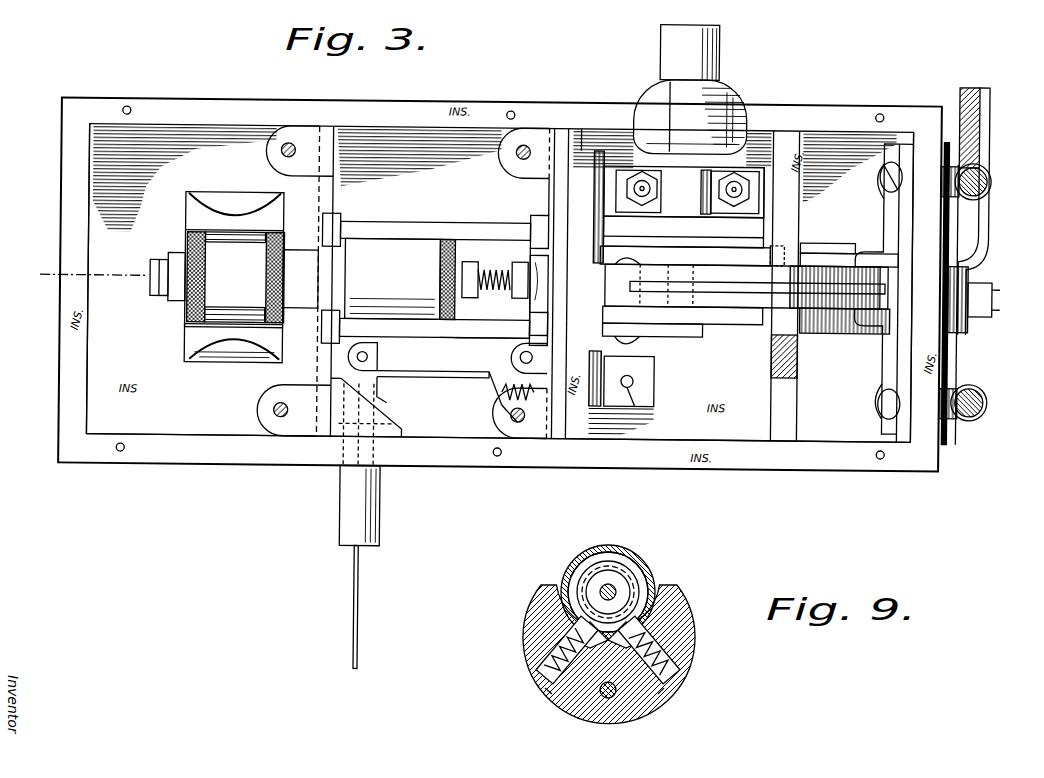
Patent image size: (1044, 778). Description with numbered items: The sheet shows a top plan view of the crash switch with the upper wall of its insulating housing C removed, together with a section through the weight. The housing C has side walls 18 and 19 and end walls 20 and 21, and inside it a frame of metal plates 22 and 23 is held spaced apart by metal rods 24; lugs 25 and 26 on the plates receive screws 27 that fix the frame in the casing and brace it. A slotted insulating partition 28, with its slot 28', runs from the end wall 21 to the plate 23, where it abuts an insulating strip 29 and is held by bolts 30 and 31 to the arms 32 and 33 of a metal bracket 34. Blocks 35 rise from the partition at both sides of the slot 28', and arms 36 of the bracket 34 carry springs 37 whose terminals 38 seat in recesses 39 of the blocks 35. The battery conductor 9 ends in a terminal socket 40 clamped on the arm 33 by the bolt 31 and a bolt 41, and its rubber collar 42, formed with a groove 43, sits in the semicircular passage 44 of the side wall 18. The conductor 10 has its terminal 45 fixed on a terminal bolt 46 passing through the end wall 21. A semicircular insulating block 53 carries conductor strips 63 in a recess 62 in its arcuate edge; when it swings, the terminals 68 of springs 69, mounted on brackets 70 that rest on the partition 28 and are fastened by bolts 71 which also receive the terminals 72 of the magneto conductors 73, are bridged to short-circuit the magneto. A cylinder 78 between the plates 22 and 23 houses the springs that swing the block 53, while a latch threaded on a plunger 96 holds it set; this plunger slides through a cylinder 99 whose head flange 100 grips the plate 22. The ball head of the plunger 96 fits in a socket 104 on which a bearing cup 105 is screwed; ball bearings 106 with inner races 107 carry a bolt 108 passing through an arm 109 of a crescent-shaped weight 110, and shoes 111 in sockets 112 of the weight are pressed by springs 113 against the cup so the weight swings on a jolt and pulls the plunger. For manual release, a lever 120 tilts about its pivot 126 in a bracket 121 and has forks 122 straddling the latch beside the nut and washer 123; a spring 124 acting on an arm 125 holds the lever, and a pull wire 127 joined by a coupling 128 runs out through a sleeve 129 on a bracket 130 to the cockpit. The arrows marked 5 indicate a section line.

In FIG. 3, the section line / shaft axis 5 is at (36, 277).
In FIG. 3, the conductor 9 is at (668, 42).
In FIG. 3, the conductor 10 is at (980, 120).
In FIG. 3, the side wall 18 is at (408, 112).
In FIG. 3, the side wall 19 is at (456, 455).
In FIG. 3, the end wall 20 is at (62, 375).
In FIG. 3, the end wall 21 is at (935, 432).
In FIG. 3, the metal plate 22 is at (326, 199).
In FIG. 3, the metal plate 23 is at (552, 205).
In FIG. 3, the metal rods 24 is at (391, 224).
In FIG. 3, the lugs 25 is at (268, 156).
In FIG. 3, the lugs 26 is at (520, 136).
In FIG. 3, the screws 27 is at (288, 144).
In FIG. 3, the partition 28 is at (869, 262).
In FIG. 3, the slot 28' is at (950, 293).
In FIG. 3, the strip of insulating material 29 is at (578, 138).
In FIG. 3, the bolt 30 is at (637, 410).
In FIG. 3, the bolt 31 is at (641, 178).
In FIG. 3, the arm 32 is at (645, 375).
In FIG. 3, the arm 33 is at (760, 170).
In FIG. 3, the metal bracket 34 is at (592, 275).
In FIG. 3, the blocks 35 is at (785, 194).
In FIG. 3, the arms 36 is at (642, 258).
In FIG. 3, the springs 37 is at (712, 348).
In FIG. 3, the terminals 38 is at (740, 365).
In FIG. 3, the notches 39 is at (790, 250).
In FIG. 3, the terminal socket 40 is at (684, 192).
In FIG. 3, the bolt 41 is at (733, 178).
In FIG. 3, the collar 42 is at (722, 84).
In FIG. 3, the groove 43 is at (670, 108).
In FIG. 3, the semi-circular recess 44 is at (737, 97).
In FIG. 3, the terminal 45 is at (990, 235).
In FIG. 3, the terminal pin 46 is at (984, 306).
In FIG. 3, the block of insulating material 53 is at (745, 286).
In FIG. 3, the slot 62 is at (872, 320).
In FIG. 3, the conductor strips 63 is at (800, 310).
In FIG. 3, the terminals 68 is at (823, 260).
In FIG. 3, the springs 69 is at (858, 262).
In FIG. 3, the brackets 70 is at (895, 210).
In FIG. 3, the bolts 71 is at (884, 168).
In FIG. 3, the terminals 72 is at (990, 183).
In FIG. 3, the conductors 73 is at (982, 170).
In FIG. 3, the cylinder 78 is at (460, 336).
In FIG. 3, the plunger 96 is at (493, 278).
In FIG. 3, the cylinder 99 is at (392, 295).
In FIG. 3, the flange 100 is at (340, 265).
In FIG. 3, the socket 104 is at (297, 280).
In FIG. 3, the bearing cup 105 is at (234, 260).
In FIG. 9, the bearing cup 105 is at (637, 566).
In FIG. 9, the ball bearings 106 is at (578, 578).
In FIG. 9, the inner race 107 is at (628, 586).
In FIG. 3, the bolt 108 is at (152, 272).
In FIG. 9, the bolt 108 is at (608, 584).
In FIG. 3, the arm 109 is at (172, 312).
In FIG. 9, the arm 109 is at (568, 722).
In FIG. 3, the weight 110 is at (200, 352).
In FIG. 9, the weight 110 is at (693, 648).
In FIG. 9, the shoes 111 is at (565, 638).
In FIG. 9, the sockets 112 is at (528, 668).
In FIG. 9, the springs 113 is at (548, 688).
In FIG. 3, the lever 120 is at (420, 364).
In FIG. 3, the bracket 121 is at (520, 358).
In FIG. 3, the forks 122 is at (540, 307).
In FIG. 3, the nut and washer 123 is at (530, 270).
In FIG. 3, the spring 124 is at (500, 381).
In FIG. 3, the arm 125 is at (500, 401).
In FIG. 3, the pivot 126 is at (478, 356).
In FIG. 3, the pull wire 127 is at (356, 610).
In FIG. 3, the coupling 128 is at (386, 404).
In FIG. 3, the sleeve 129 is at (343, 516).
In FIG. 3, the bracket 130 is at (340, 438).
In FIG. 3, the housing C is at (56, 210).